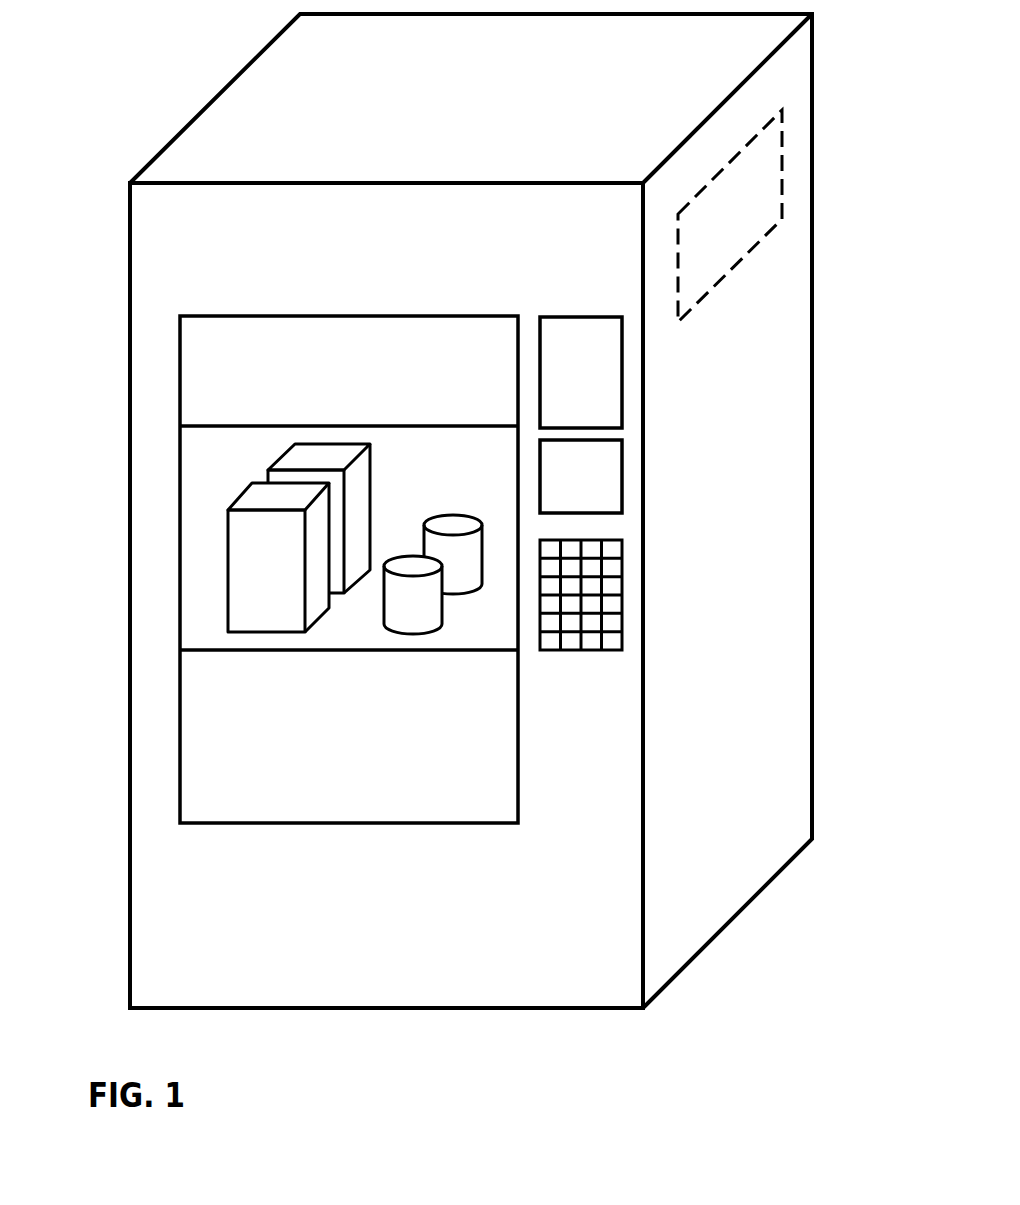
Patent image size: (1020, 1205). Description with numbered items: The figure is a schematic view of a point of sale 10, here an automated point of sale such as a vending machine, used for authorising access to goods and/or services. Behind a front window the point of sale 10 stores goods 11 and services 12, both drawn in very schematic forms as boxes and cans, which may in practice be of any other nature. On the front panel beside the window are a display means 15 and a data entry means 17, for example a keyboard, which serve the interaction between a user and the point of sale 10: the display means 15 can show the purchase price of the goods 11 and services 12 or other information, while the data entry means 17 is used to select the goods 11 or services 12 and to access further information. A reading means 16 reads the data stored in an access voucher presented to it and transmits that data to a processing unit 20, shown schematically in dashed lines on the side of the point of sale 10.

The point of sale 10 is at (328, 183).
The goods 11 is at (278, 553).
The services 12 is at (422, 620).
The display means 15 is at (593, 362).
The reading means 16 is at (608, 483).
The data entry means 17 is at (617, 597).
The processing unit 20 is at (752, 203).